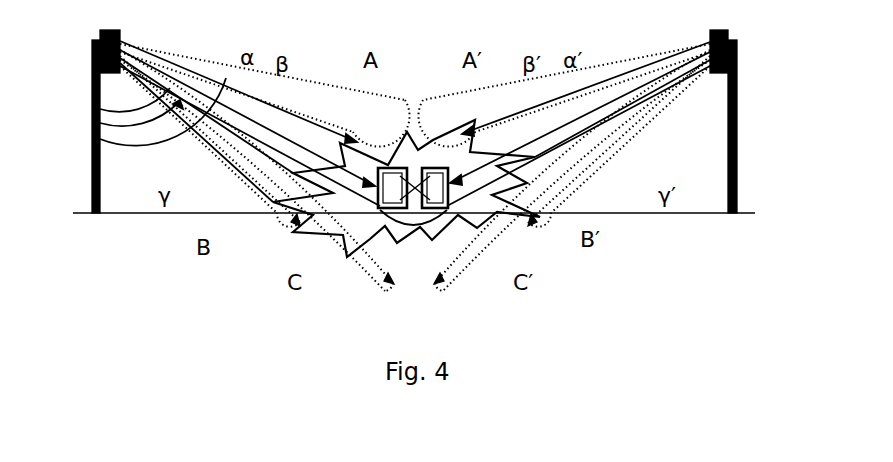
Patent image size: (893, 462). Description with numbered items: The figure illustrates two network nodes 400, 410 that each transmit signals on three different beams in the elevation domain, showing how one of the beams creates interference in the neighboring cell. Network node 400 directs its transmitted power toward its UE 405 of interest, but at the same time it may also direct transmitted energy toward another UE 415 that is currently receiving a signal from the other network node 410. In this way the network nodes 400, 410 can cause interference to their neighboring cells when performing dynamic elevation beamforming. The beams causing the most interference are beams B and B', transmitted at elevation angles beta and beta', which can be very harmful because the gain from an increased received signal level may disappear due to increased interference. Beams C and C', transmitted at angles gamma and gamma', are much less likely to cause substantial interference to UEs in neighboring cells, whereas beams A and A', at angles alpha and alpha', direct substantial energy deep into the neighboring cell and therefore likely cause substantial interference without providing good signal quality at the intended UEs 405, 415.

The network node 400 is at (113, 30).
The network node 410 is at (711, 30).
The UE 405 is at (255, 166).
The UE 415 is at (564, 168).